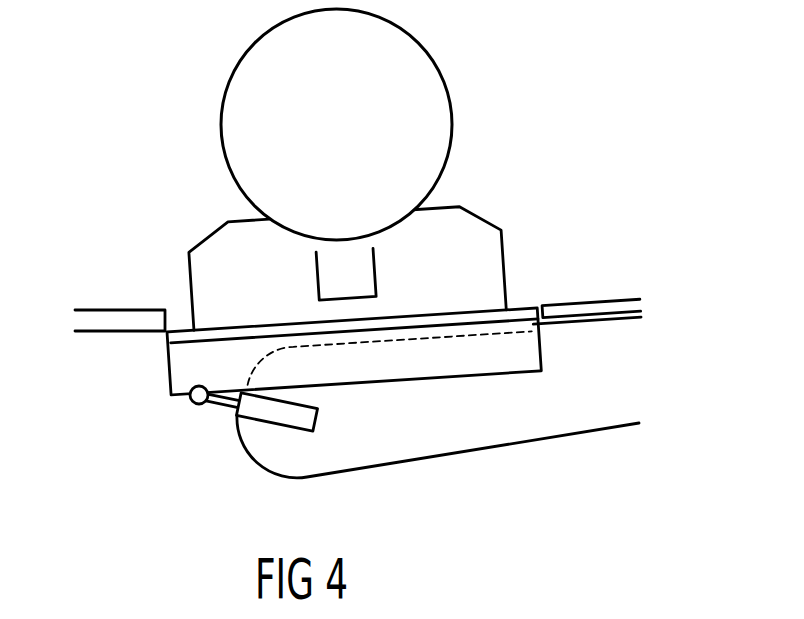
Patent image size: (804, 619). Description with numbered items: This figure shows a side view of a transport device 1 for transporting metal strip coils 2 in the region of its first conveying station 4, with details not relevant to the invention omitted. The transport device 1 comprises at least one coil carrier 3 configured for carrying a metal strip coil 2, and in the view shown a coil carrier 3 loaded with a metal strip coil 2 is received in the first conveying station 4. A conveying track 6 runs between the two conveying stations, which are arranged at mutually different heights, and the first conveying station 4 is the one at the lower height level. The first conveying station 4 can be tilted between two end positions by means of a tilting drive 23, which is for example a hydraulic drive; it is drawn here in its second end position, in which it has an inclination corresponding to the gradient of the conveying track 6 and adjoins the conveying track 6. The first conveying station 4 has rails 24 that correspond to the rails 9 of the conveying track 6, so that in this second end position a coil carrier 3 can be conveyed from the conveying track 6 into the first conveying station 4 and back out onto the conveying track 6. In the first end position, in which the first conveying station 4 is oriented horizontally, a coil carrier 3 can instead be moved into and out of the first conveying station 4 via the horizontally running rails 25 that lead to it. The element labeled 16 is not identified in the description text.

The transport device 1 is at (150, 54).
The metal strip coil 2 is at (435, 108).
The coil carrier 3 is at (482, 212).
The first conveying station 4 is at (553, 347).
The conveying track 6 is at (566, 280).
The rails of the conveying track 9 is at (595, 313).
The housing 16 is at (608, 430).
The tilting drive 23 is at (307, 420).
The rails of the first conveying station 24 is at (185, 337).
The horizontally running rails 25 is at (100, 315).